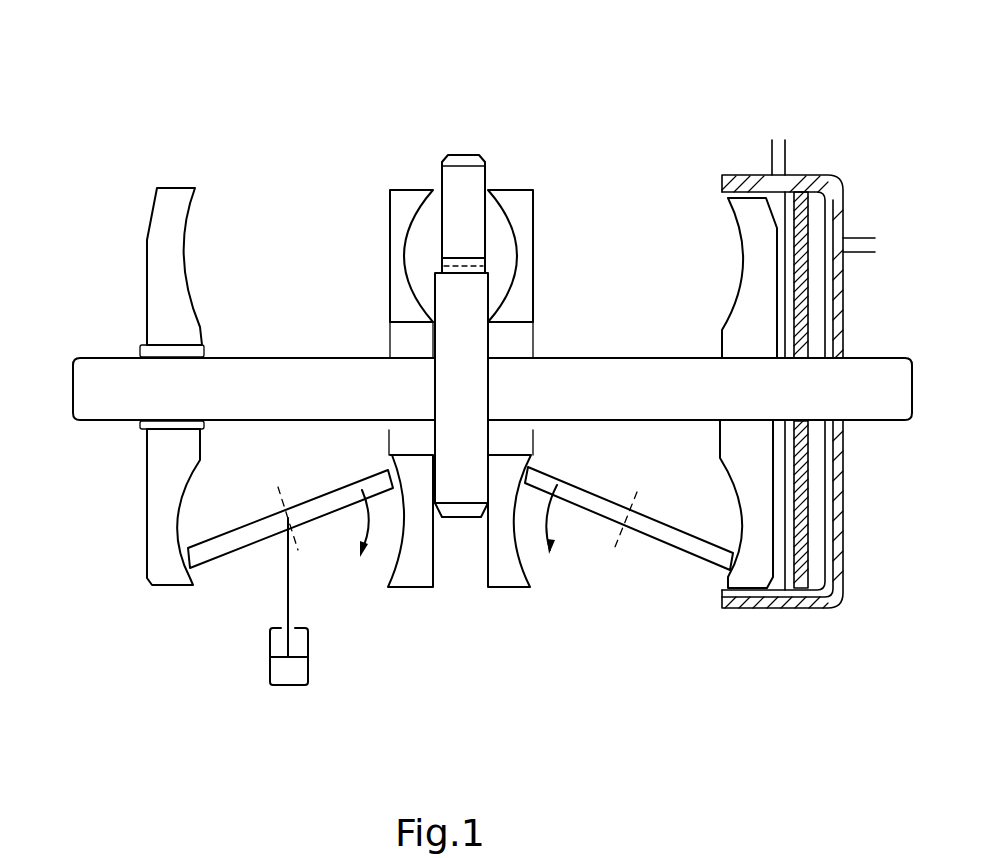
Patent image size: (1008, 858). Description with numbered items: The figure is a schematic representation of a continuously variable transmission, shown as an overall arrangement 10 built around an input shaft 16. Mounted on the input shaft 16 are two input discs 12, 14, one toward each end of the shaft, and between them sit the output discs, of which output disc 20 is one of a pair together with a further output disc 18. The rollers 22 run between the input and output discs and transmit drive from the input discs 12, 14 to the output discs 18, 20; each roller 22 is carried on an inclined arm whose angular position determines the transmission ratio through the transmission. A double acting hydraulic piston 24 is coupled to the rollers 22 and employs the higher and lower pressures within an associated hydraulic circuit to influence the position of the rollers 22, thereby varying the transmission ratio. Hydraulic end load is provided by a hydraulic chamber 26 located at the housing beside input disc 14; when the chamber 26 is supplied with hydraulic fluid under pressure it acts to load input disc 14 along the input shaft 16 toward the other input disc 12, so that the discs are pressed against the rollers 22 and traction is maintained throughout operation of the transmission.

The agitator assembly 10 is at (112, 256).
The input disc 12 is at (174, 197).
The input disc 14 is at (750, 217).
The input shaft 16 is at (122, 402).
The inner blade 18 is at (410, 197).
The output disc 20 is at (517, 197).
The rollers 22 is at (313, 503).
The double acting hydraulic piston 24 is at (310, 651).
The hydraulic chamber 26 is at (778, 573).